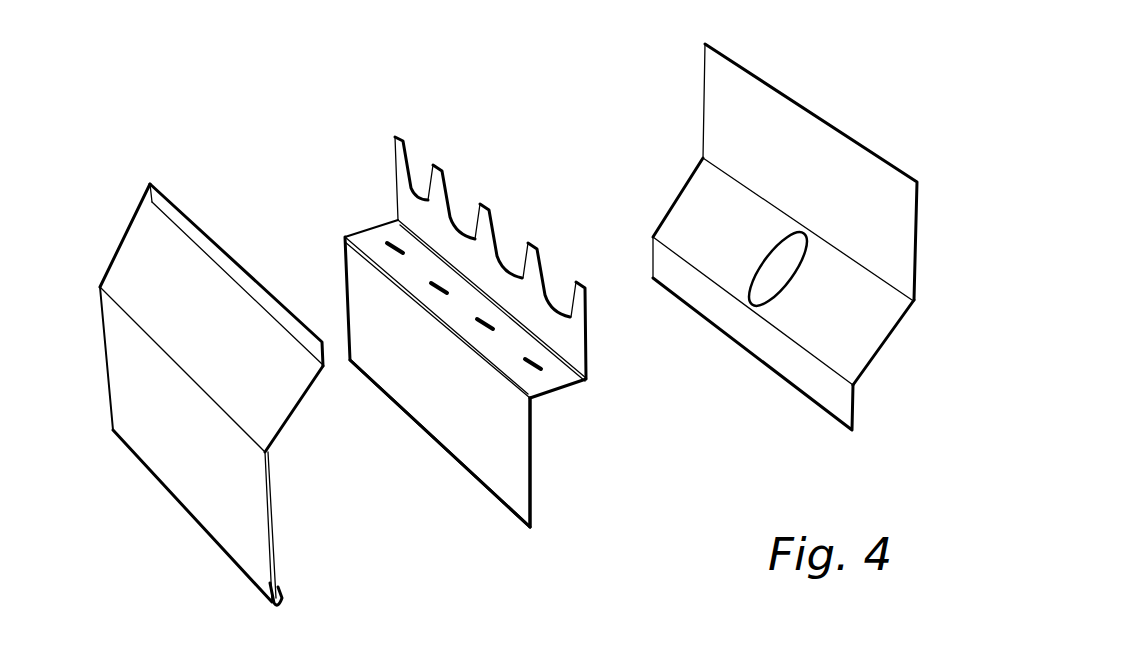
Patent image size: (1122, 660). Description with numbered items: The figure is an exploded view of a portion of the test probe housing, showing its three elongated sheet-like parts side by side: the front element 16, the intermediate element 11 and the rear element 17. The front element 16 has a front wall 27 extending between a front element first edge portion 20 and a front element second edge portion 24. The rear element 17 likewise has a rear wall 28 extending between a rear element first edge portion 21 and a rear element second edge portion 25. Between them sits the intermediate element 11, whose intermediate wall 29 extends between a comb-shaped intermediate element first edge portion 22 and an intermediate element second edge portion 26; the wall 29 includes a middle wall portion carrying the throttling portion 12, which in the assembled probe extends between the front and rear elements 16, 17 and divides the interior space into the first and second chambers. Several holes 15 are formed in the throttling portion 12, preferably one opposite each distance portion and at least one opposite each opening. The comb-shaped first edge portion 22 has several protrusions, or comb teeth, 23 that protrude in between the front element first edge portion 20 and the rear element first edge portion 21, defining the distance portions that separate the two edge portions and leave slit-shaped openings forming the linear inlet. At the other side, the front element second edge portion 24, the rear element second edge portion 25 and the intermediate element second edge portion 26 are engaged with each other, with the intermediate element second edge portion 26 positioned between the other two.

The intermediate element 11 is at (471, 346).
The throttling portion 12 is at (472, 302).
The hole 15 is at (440, 290).
The front element 16 is at (203, 392).
The rear element 17 is at (785, 237).
The front element first edge portion 20 is at (152, 202).
The rear element first edge portion 21 is at (835, 155).
The intermediate element first edge portion 22 is at (455, 245).
The protrusions (comb teeth) 23 is at (437, 185).
The front element second edge portion 24 is at (203, 505).
The rear element second edge portion 25 is at (772, 345).
The intermediate element second edge portion 26 is at (480, 453).
The front wall 27 is at (113, 317).
The rear wall 28 is at (882, 312).
The intermediate wall 29 is at (518, 418).